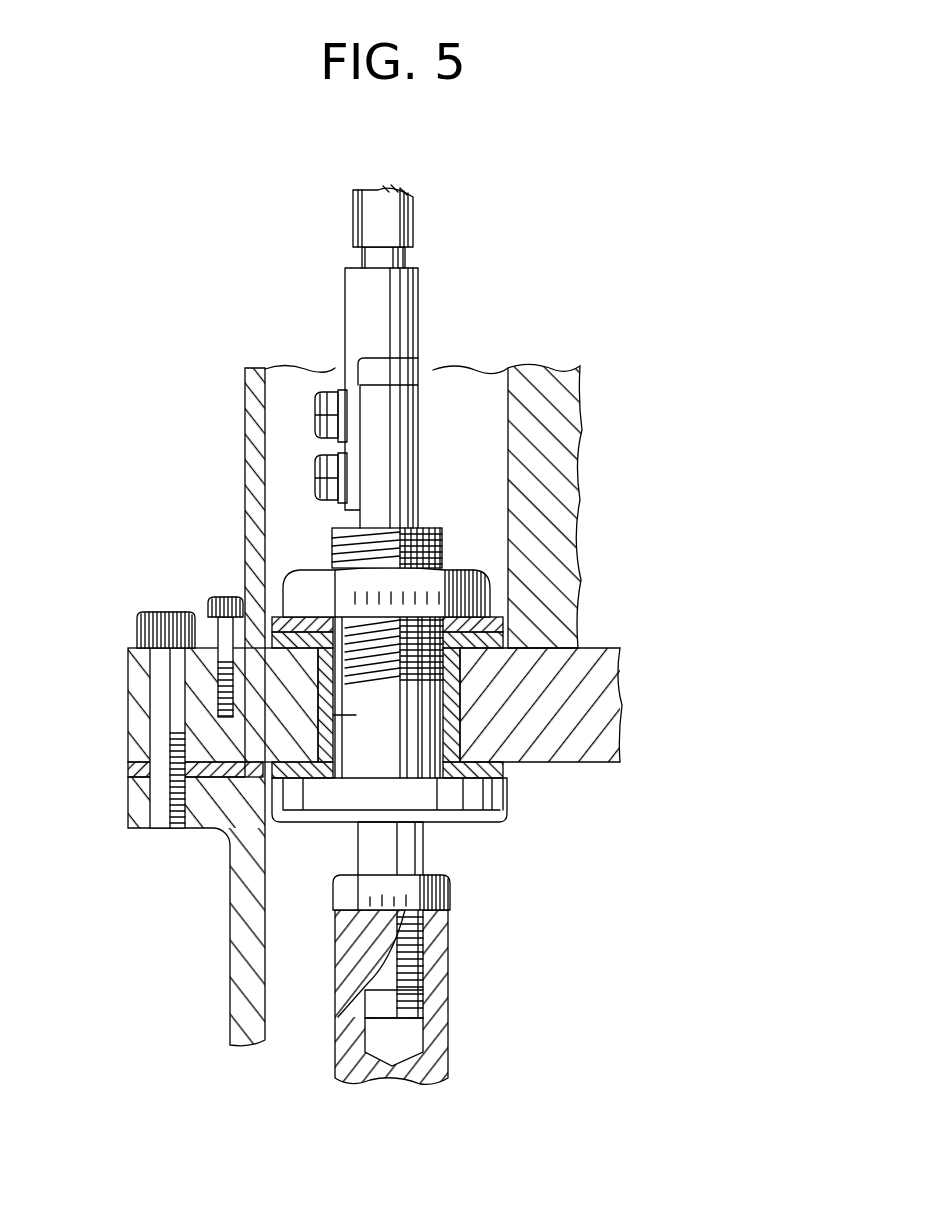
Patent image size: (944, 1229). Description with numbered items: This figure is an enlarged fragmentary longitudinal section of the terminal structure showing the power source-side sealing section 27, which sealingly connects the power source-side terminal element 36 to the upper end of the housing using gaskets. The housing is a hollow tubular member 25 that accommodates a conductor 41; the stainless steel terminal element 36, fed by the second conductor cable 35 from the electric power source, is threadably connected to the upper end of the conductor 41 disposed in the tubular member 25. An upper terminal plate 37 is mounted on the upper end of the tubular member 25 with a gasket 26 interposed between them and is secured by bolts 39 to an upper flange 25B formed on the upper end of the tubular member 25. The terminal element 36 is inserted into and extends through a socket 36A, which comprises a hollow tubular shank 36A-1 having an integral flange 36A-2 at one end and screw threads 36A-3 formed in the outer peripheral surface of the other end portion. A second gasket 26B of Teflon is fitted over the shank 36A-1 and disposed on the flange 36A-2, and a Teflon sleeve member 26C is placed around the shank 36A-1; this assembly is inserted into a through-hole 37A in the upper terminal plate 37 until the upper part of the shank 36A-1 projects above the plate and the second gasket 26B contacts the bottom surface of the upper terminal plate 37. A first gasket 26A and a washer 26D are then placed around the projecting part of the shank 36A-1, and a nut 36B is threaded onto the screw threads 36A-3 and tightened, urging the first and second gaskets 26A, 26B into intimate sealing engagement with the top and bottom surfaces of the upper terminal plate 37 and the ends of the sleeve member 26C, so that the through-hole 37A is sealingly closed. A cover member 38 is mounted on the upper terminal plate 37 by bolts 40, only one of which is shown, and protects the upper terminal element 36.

The tubular member 25 is at (243, 995).
The upper flange 25B is at (140, 808).
The gasket 26 is at (130, 769).
The first gasket 26A is at (503, 642).
The second gasket 26B is at (508, 768).
The sleeve member 26C is at (460, 690).
The washer 26D is at (503, 625).
The power source-side sealing section 27 is at (303, 547).
The second conductor cable 35 is at (397, 219).
The terminal element 36 is at (420, 446).
The socket 36A is at (309, 824).
The shank 36A-1 is at (317, 712).
The flange 36A-2 is at (507, 800).
The screw threads 36A-3 is at (443, 546).
The nut 36B is at (305, 585).
The upper terminal plate 37 is at (128, 676).
The through-hole 37A is at (460, 732).
The cover member 38 is at (553, 378).
The bolts 39 is at (140, 630).
The bolt 40 is at (206, 606).
The conductor 41 is at (440, 1007).